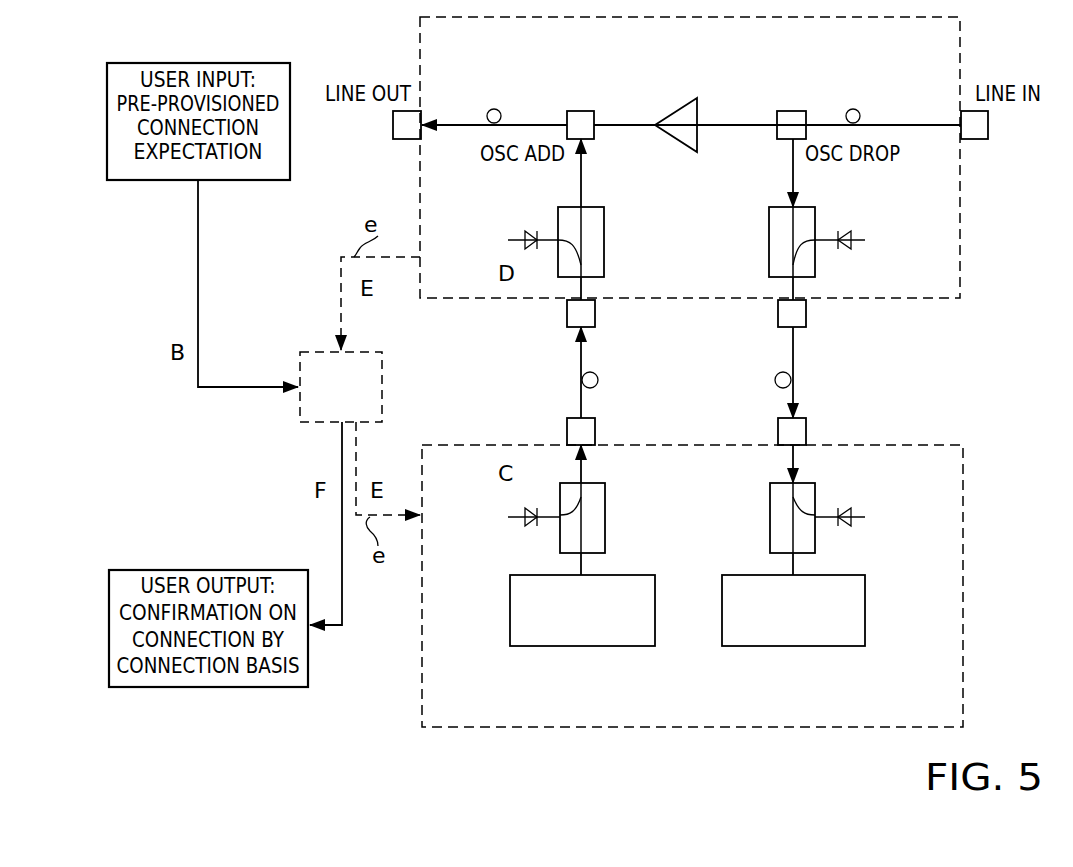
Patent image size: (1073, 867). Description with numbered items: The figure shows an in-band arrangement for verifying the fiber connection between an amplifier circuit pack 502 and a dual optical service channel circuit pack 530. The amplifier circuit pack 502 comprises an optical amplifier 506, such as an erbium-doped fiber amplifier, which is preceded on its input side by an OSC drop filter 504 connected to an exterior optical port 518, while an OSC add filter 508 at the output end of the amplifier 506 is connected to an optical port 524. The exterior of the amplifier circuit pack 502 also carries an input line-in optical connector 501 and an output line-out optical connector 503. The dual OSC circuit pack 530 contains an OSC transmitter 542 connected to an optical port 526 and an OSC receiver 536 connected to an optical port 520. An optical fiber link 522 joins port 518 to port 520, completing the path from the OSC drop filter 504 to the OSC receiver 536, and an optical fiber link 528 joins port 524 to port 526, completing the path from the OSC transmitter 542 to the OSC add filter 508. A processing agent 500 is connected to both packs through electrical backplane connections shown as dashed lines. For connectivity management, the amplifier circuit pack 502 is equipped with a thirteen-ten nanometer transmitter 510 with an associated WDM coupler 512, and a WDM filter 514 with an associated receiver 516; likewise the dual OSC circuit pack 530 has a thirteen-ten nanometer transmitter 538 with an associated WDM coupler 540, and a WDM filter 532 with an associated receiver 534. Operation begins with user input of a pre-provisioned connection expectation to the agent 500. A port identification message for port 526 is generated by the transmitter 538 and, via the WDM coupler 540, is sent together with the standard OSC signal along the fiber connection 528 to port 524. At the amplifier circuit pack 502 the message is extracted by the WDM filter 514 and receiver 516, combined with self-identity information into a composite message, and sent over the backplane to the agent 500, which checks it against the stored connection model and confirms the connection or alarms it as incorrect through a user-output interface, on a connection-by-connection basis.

The processing agent 500 is at (322, 414).
The input (line-in) optical connector 501 is at (988, 128).
The amplifier circuit pack 502 is at (946, 53).
The output (line-out) optical connector 503 is at (393, 125).
The OSC drop filter 504 is at (790, 111).
The optical amplifier 506 is at (680, 110).
The OSC add filter 508 is at (580, 111).
The 1310 nm transmitter 510 is at (850, 248).
The WDM coupler 512 is at (769, 243).
The WDM filter 514 is at (604, 243).
The 1310 nm receiver 516 is at (525, 234).
The optical port 518 is at (778, 320).
The optical port 520 is at (778, 420).
The optical fiber link 522 is at (792, 357).
The optical port 524 is at (595, 320).
The optical port 526 is at (595, 420).
The optical fiber link 528 is at (582, 357).
The dual OSC circuit pack 530 is at (948, 716).
The WDM filter 532 is at (770, 512).
The receiver 534 is at (850, 524).
The OSC receiver 536 is at (768, 646).
The 1310 nm transmitter 538 is at (526, 525).
The WDM coupler 540 is at (605, 512).
The OSC transmitter 542 is at (606, 646).